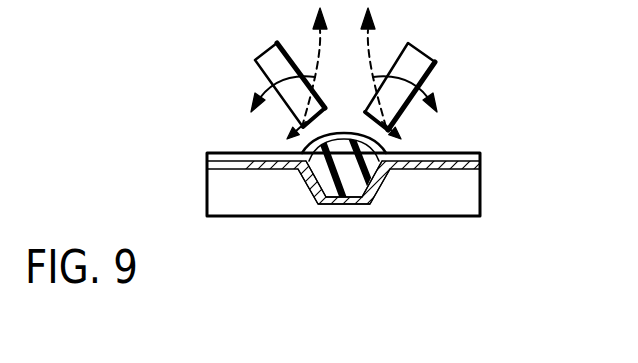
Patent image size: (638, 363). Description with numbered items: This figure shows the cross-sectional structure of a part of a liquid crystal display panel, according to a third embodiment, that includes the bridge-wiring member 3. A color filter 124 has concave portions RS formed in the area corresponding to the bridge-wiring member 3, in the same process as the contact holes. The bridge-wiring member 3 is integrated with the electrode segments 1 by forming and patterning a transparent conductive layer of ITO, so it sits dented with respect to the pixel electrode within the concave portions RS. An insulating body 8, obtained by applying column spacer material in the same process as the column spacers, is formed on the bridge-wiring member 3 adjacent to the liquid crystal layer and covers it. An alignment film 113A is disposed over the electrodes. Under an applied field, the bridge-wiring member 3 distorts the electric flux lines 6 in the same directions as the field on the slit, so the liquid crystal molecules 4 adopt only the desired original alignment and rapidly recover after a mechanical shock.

The electrode segments 1 is at (460, 166).
The bridge-wiring member 3 is at (321, 211).
The liquid crystal molecules 4 is at (420, 57).
The electric flux lines 6 is at (370, 47).
The insulating body 8 is at (353, 193).
The alignment film 113A is at (463, 156).
The color filter 124 is at (225, 192).
The concave portions RS is at (372, 186).